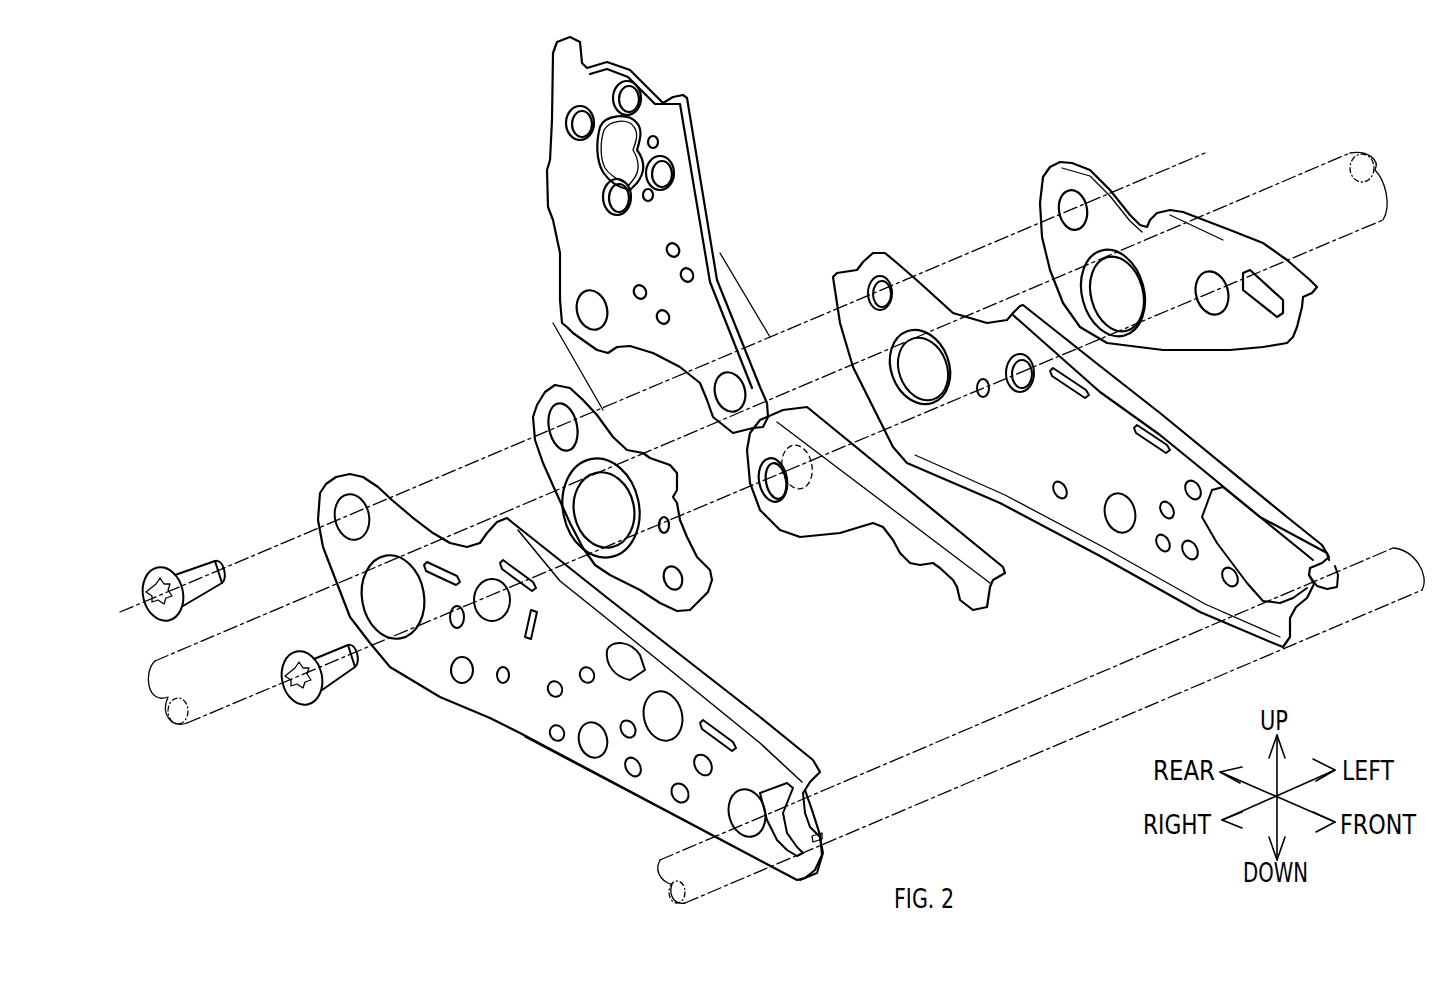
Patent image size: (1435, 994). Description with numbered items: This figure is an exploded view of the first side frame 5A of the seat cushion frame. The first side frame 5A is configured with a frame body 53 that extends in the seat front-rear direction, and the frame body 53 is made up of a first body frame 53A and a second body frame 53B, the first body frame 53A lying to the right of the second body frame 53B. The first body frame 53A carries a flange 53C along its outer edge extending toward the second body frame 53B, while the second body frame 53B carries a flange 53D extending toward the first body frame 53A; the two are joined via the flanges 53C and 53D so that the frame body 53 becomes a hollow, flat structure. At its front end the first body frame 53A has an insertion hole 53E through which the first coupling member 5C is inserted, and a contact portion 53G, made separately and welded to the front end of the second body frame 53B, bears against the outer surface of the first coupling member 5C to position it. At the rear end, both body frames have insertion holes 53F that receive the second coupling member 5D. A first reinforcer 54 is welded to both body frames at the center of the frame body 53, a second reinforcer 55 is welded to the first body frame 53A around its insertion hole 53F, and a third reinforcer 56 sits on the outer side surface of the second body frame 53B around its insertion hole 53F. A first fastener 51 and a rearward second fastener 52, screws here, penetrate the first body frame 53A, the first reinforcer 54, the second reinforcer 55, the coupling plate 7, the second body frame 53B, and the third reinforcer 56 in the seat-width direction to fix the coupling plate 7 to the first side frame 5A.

The first side frame 5A is at (335, 237).
The first coupling member 5C is at (1025, 762).
The second coupling member 5D is at (1292, 175).
The coupling plate 7 is at (560, 185).
The first fastener 51 is at (352, 668).
The second fastener 52 is at (195, 573).
The frame body 53 is at (617, 540).
The first body frame 53A is at (700, 680).
The second body frame 53B is at (1222, 477).
The flange 53C is at (578, 762).
The flange 53D is at (1172, 430).
The insertion hole 53E is at (820, 832).
The insertion holes 53F is at (377, 612).
The contact portion 53G is at (1318, 600).
The first reinforcer 54 is at (912, 545).
The second reinforcer 55 is at (548, 395).
The third reinforcer 56 is at (1055, 180).